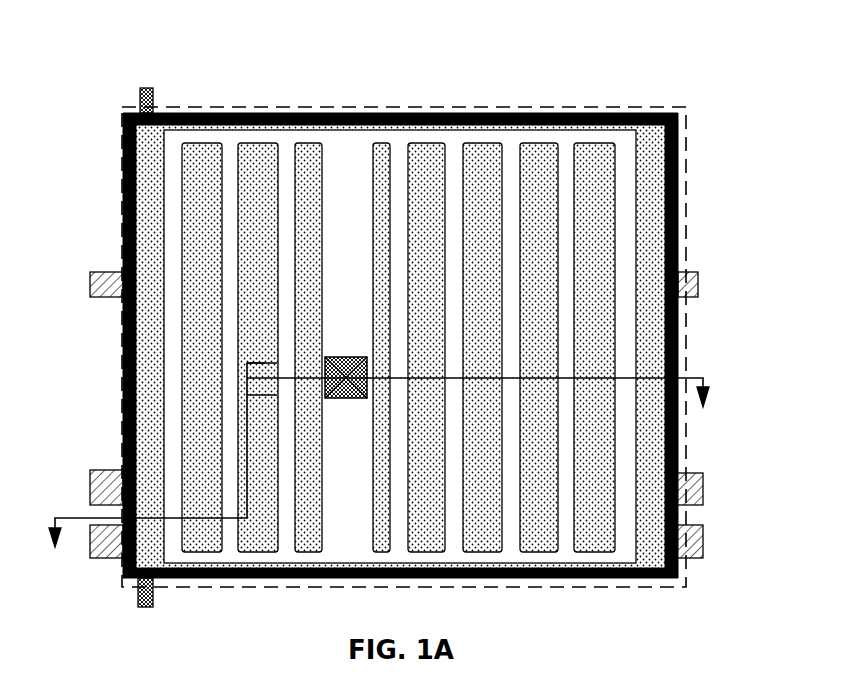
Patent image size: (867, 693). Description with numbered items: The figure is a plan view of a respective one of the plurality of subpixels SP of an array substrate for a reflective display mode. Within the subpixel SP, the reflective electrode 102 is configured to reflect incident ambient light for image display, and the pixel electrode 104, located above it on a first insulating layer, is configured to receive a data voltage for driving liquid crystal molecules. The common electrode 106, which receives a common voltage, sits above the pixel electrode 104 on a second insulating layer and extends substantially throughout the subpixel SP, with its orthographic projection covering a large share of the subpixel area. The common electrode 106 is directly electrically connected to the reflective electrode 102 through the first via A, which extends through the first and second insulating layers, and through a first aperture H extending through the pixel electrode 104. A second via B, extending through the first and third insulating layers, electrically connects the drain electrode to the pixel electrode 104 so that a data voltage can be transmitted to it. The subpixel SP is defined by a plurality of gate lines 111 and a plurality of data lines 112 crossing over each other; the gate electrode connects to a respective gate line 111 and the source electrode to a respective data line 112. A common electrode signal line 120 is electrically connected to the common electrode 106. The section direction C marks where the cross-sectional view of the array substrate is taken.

The reflective electrode 102 is at (678, 153).
The pixel electrode 104 is at (655, 193).
The common electrode 106 is at (507, 147).
The gate lines 111 is at (703, 490).
The data lines 112 is at (155, 93).
The common electrode signal line 120 is at (698, 283).
The subpixel SP is at (487, 107).
The first via A is at (340, 357).
The second via B is at (265, 363).
The first aperture H is at (362, 357).
The CC' direction C is at (380, 469).